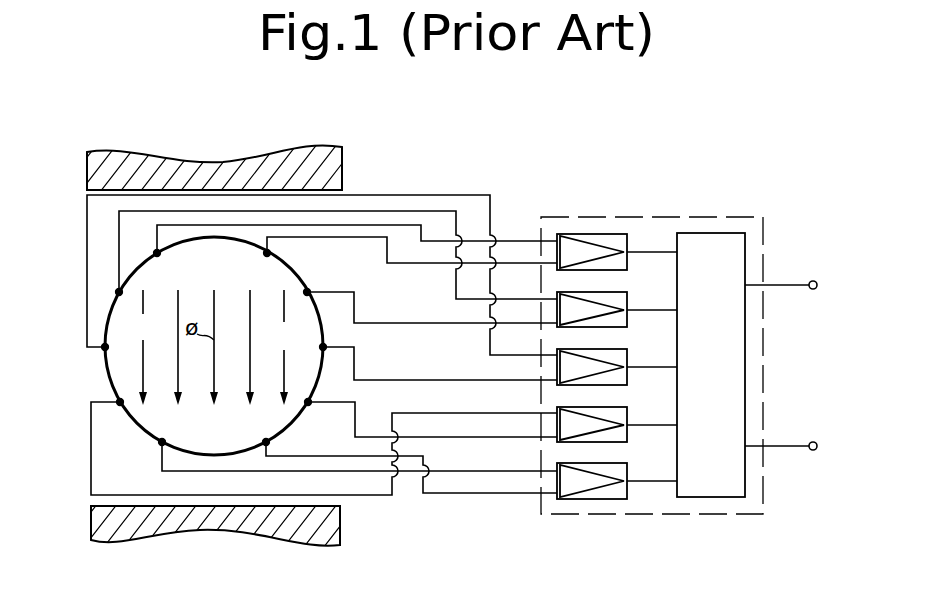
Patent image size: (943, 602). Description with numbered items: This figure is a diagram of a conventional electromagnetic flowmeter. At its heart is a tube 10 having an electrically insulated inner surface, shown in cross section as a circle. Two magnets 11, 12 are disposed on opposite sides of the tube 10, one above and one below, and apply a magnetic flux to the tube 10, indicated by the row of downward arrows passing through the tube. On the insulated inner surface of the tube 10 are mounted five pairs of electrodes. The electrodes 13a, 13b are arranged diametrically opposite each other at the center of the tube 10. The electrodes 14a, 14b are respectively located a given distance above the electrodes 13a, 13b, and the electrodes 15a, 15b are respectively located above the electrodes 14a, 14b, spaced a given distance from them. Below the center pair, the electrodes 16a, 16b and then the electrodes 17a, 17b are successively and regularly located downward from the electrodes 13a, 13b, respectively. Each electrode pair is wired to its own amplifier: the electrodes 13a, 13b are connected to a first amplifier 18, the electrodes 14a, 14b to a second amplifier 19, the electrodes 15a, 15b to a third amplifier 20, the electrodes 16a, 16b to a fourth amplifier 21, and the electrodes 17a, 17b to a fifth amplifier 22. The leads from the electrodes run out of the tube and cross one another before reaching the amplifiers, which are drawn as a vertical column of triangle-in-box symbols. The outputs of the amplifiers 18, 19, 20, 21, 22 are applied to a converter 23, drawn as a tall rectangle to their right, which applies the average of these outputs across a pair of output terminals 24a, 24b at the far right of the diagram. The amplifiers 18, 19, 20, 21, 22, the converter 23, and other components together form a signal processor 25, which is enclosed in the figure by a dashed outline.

The tube 10 is at (108, 372).
The magnet 11 is at (217, 163).
The magnet 12 is at (220, 530).
The electrode 13a is at (131, 340).
The electrode 13b is at (323, 347).
The electrode 14a is at (119, 292).
The electrode 14b is at (307, 292).
The electrode 15a is at (157, 253).
The electrode 15b is at (267, 253).
The electrode 16a is at (120, 402).
The electrode 16b is at (308, 402).
The electrode 17a is at (162, 442).
The electrode 17b is at (266, 442).
The first amplifier 18 is at (627, 367).
The second amplifier 19 is at (627, 310).
The third amplifier 20 is at (627, 252).
The fourth amplifier 21 is at (627, 425).
The fifth amplifier 22 is at (627, 481).
The converter 23 is at (710, 232).
The output terminal 24a is at (813, 281).
The output terminal 24b is at (813, 442).
The signal processor 25 is at (584, 217).